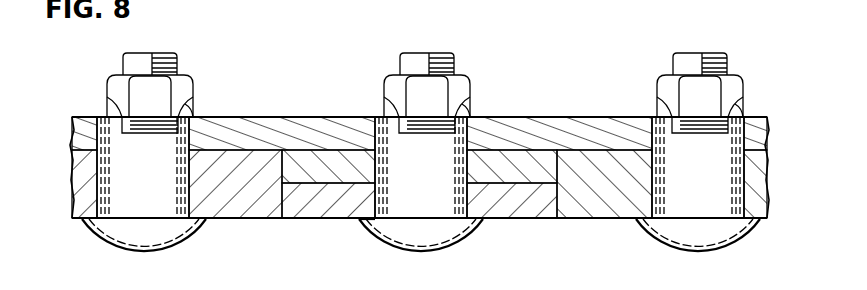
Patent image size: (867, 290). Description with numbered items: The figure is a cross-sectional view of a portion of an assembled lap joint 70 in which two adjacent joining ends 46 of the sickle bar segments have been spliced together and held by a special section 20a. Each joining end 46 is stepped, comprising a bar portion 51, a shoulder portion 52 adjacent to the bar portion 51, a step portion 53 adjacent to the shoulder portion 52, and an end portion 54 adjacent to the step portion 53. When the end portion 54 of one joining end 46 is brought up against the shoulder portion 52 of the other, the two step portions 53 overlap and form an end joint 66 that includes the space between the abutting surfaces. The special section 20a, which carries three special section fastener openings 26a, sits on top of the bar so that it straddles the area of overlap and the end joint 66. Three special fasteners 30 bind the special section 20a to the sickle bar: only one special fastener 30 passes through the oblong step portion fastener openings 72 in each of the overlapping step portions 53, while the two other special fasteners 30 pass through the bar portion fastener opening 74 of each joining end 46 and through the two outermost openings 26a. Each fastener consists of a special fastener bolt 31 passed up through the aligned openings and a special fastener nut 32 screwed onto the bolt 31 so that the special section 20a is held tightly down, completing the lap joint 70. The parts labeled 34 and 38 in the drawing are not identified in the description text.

The special section 20a is at (593, 127).
The special section fastener openings 26a is at (191, 116).
The special fasteners 30 is at (110, 247).
The special fastener bolts 31 is at (177, 242).
The special fastener nuts 32 is at (186, 95).
The bolt 34 is at (152, 55).
The sleeve 38 is at (115, 175).
The joining ends 46 is at (70, 205).
The bar portion 51 is at (71, 221).
The shoulder portion 52 is at (288, 208).
The step portion 53 is at (290, 164).
The end portion 54 is at (284, 164).
The end joint 66 is at (283, 186).
The lap joint 70 is at (351, 262).
The step portion fastener openings 72 is at (419, 206).
The bar portion fastener openings 74 is at (107, 142).